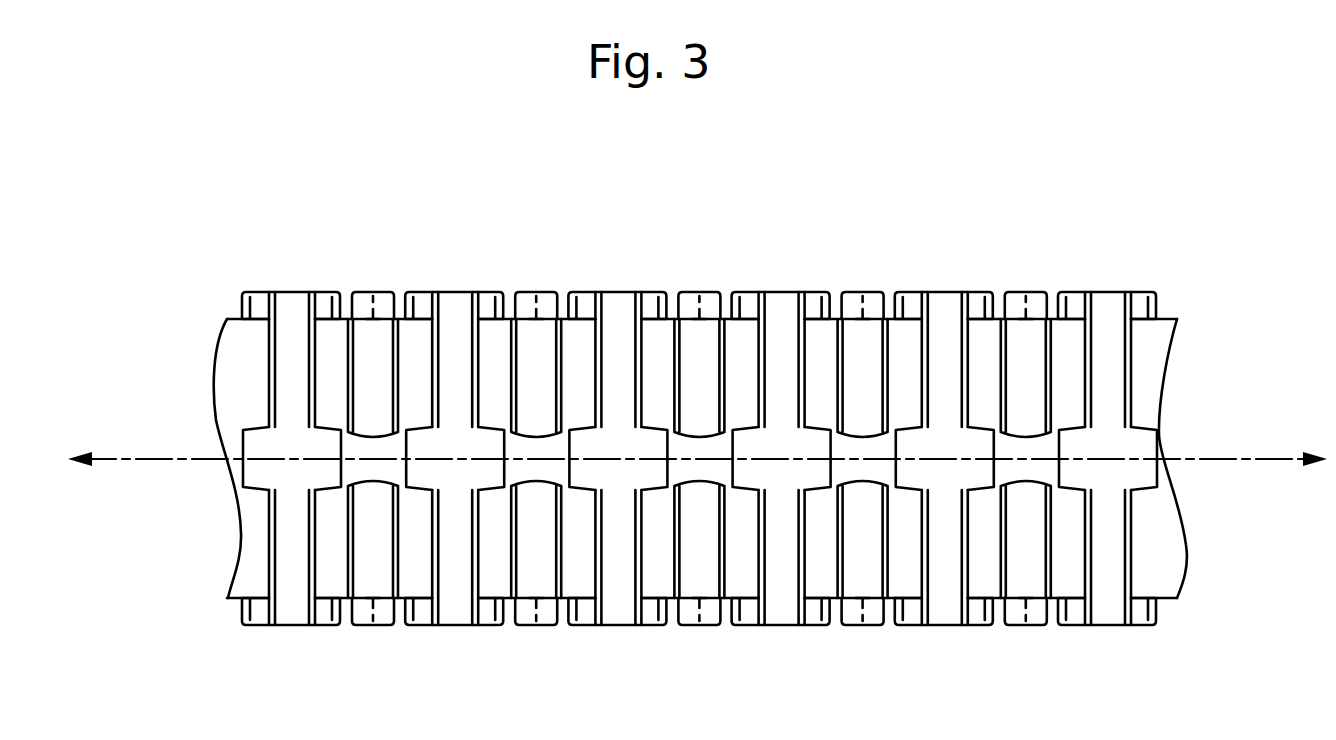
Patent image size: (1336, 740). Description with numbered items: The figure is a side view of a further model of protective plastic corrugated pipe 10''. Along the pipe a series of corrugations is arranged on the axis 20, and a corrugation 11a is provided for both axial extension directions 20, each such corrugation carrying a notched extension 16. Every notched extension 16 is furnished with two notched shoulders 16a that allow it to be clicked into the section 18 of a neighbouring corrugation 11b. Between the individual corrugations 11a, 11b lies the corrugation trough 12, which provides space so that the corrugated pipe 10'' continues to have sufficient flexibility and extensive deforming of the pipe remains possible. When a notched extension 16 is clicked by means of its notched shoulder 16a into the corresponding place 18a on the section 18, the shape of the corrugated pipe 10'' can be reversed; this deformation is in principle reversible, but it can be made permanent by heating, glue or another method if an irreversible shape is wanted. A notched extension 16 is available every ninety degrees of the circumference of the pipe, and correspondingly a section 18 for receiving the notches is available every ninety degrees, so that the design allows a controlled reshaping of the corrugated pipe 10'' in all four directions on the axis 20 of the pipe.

The protective plastic corrugated pipe 10'' is at (589, 356).
The corrugation 11a is at (944, 365).
The neighbouring corrugation 11b is at (1032, 295).
The corrugation trough 12 is at (821, 580).
The notched extension 16 is at (1147, 465).
The notched shoulder 16a is at (1222, 552).
The section 18 is at (1025, 467).
The corresponding place 18a is at (1000, 487).
The axial extension direction 20 is at (133, 459).